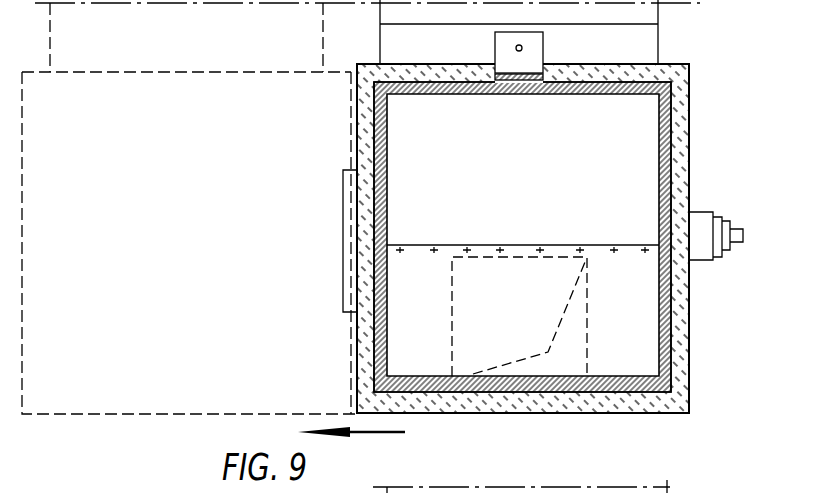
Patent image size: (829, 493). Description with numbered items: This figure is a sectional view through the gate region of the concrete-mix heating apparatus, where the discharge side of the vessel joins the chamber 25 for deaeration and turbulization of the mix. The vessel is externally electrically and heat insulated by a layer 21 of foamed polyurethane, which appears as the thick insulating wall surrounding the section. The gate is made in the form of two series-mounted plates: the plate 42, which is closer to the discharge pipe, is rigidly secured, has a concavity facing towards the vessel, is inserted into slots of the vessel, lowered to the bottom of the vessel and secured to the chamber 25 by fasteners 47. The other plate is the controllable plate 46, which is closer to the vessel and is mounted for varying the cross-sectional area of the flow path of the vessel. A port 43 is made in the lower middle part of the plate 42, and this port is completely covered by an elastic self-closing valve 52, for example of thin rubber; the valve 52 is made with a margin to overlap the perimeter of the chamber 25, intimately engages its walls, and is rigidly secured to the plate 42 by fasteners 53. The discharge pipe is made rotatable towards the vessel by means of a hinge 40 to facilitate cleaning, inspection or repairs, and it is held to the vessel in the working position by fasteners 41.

The layer of foamed polyurethane 21 is at (367, 120).
The chamber 25 is at (380, 325).
The hinge 40 is at (345, 183).
The fasteners 41 is at (701, 250).
The plate 42 is at (640, 112).
The port 43 is at (475, 347).
The controllable plate 46 is at (640, 11).
The fasteners 47 is at (516, 48).
The elastic self-closing valve 52 is at (630, 357).
The fasteners 53 is at (397, 252).